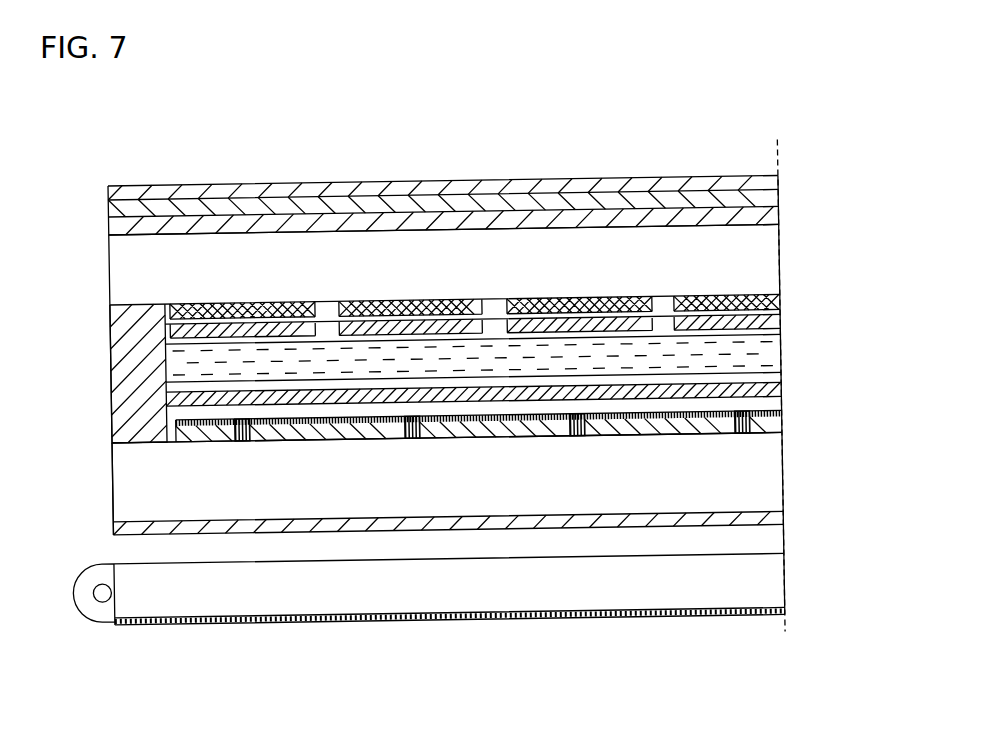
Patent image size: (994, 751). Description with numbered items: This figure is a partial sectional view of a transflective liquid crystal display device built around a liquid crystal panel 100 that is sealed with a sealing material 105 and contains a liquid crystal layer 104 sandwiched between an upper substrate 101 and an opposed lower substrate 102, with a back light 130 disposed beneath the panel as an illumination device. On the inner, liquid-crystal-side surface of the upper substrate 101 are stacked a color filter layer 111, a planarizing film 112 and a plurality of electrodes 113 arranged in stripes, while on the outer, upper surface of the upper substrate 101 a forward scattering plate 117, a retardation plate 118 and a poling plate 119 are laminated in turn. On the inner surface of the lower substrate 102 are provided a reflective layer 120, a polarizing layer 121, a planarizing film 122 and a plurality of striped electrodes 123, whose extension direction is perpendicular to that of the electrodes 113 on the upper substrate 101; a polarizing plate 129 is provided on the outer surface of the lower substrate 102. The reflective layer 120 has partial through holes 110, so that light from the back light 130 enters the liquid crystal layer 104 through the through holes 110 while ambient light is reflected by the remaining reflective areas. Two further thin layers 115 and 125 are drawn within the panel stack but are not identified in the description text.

The liquid crystal panel 100 is at (747, 175).
The upper substrate 101 is at (773, 250).
The lower substrate 102 is at (780, 492).
The liquid crystal layer 104 is at (768, 357).
The sealing material 105 is at (137, 318).
The through holes 110 is at (247, 442).
The color filter layer 111 is at (187, 306).
The planarizing film 112 is at (779, 312).
The electrodes 113 is at (260, 330).
The common electrode layer 115 is at (779, 335).
The forward scattering plate 117 is at (779, 207).
The retardation plate 118 is at (779, 192).
The poling plate 119 is at (779, 178).
The reflective layer 120 is at (200, 442).
The polarizing layer 121 is at (785, 422).
The planarizing film 122 is at (781, 413).
The electrodes 123 is at (779, 403).
The overcoat layer 125 is at (779, 377).
The polarizing plate 129 is at (783, 517).
The back light 130 is at (780, 585).